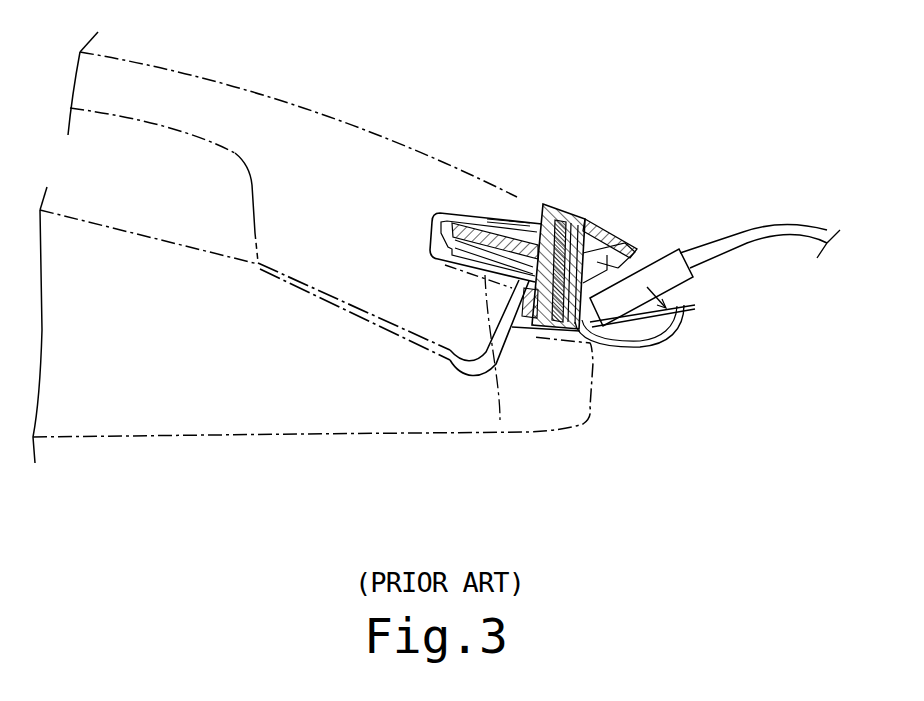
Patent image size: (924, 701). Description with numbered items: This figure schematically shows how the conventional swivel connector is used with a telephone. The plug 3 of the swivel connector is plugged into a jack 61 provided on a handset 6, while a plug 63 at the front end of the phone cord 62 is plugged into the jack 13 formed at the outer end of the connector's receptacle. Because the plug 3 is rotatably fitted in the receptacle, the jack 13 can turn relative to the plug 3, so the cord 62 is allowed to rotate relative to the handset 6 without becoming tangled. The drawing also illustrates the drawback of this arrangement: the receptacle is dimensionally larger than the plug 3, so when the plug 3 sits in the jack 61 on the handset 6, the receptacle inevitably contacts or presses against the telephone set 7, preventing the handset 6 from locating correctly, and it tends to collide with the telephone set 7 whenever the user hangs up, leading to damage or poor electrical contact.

The plug 3 is at (500, 240).
The handset 6 is at (407, 145).
The telephone set 7 is at (227, 420).
The jack 13 is at (645, 255).
The jack 61 is at (500, 420).
The phone cord 62 is at (742, 242).
The plug 63 is at (680, 310).